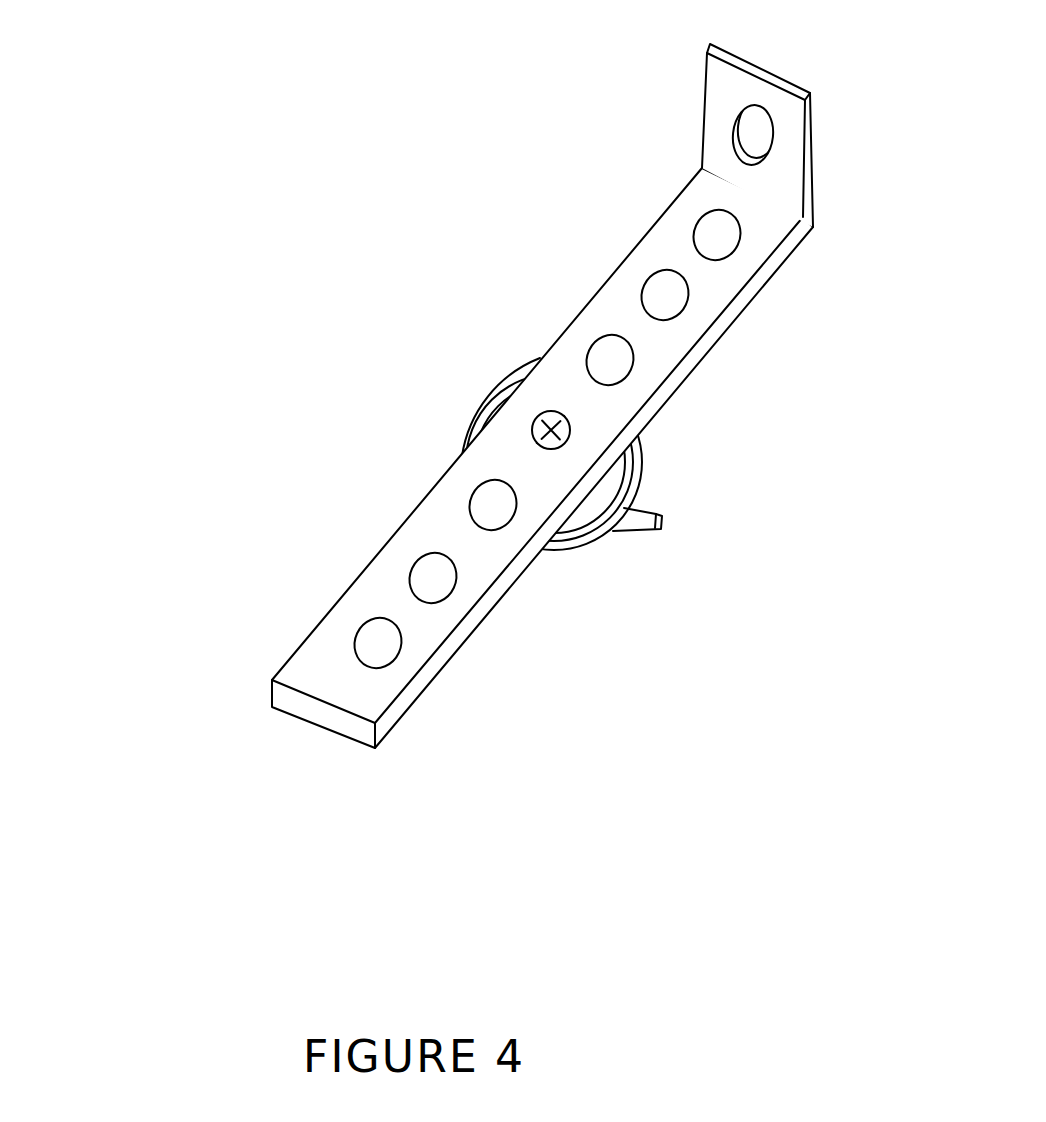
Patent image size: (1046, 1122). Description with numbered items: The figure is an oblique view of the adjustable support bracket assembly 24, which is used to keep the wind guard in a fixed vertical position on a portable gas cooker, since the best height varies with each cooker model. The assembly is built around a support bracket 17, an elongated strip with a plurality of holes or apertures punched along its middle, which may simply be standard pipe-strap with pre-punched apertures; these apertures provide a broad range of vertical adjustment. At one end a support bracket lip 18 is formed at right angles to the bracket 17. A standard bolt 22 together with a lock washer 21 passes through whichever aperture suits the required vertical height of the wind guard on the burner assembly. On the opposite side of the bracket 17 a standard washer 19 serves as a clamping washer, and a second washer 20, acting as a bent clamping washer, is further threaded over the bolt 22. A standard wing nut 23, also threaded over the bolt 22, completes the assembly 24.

The support bracket 17 is at (727, 305).
The support bracket lip 18 is at (757, 62).
The standard washer 19 is at (540, 410).
The second washer 20 is at (633, 467).
The lock washer 21 is at (540, 457).
The bolt 22 is at (542, 417).
The wing nut 23 is at (665, 517).
The adjustable support bracket assembly 24 is at (177, 763).